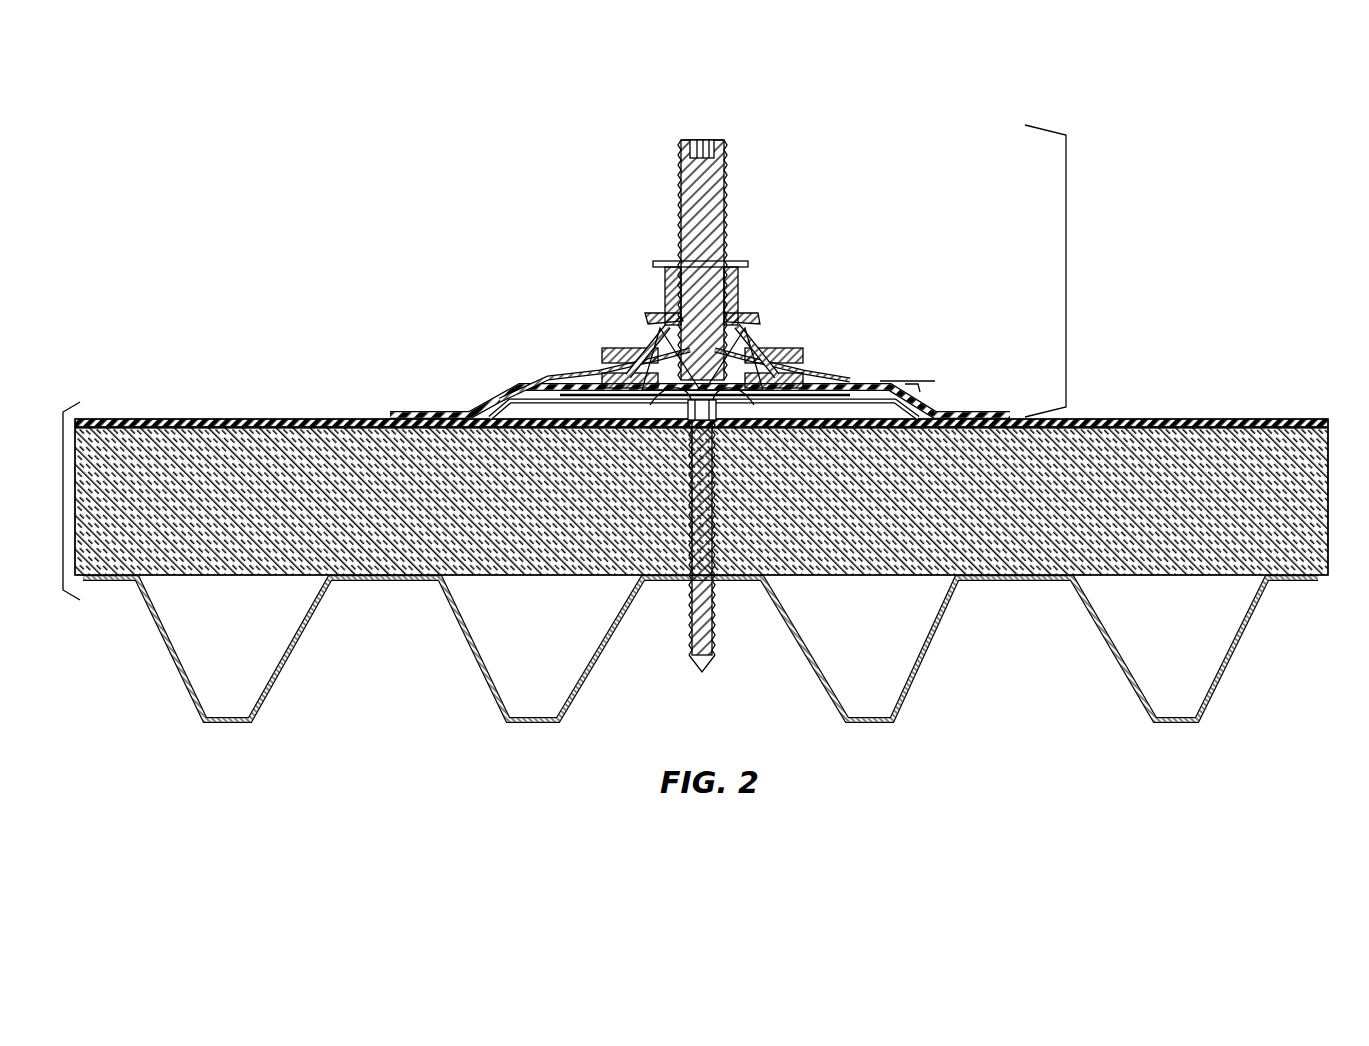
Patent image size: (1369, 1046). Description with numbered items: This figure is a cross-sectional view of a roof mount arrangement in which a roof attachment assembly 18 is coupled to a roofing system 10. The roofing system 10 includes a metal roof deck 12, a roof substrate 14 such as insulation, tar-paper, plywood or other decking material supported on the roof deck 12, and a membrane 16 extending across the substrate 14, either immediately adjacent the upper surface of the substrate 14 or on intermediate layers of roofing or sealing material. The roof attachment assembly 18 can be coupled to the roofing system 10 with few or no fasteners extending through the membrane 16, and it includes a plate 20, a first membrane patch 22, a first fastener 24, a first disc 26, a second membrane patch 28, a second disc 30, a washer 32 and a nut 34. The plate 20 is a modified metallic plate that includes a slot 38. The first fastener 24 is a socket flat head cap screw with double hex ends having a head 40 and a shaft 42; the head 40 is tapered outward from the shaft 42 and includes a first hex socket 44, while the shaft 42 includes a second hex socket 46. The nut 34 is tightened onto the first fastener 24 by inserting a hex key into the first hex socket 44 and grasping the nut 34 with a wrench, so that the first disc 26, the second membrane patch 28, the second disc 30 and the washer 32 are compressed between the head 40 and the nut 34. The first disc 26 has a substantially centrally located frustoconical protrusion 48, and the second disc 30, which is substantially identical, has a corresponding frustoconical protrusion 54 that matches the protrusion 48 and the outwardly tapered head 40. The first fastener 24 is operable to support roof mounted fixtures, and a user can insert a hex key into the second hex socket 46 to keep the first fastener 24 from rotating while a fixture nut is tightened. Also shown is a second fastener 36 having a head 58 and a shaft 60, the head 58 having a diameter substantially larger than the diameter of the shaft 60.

The roofing system 10 is at (62, 562).
The metal roof deck 12 is at (178, 664).
The roof substrate 14 is at (1268, 452).
The membrane 16 is at (1200, 420).
The roof attachment assembly 18 is at (1066, 275).
The plate 20 is at (872, 384).
The first membrane patch 22 is at (425, 411).
The first fastener 24 is at (700, 256).
The first disc 26 is at (840, 386).
The second membrane patch 28 is at (918, 398).
The second disc 30 is at (602, 356).
The washer 32 is at (752, 318).
The nut 34 is at (740, 262).
The second fastener 36 is at (694, 612).
The slot 38 is at (546, 396).
The head 40 is at (790, 356).
The shaft 42 is at (708, 178).
The first hex socket 44 is at (755, 368).
The second hex socket 46 is at (700, 142).
The frustoconical protrusion 48 is at (640, 366).
The frustoconical protrusion 54 is at (668, 344).
The head 58 is at (688, 405).
The shaft 60 is at (706, 668).